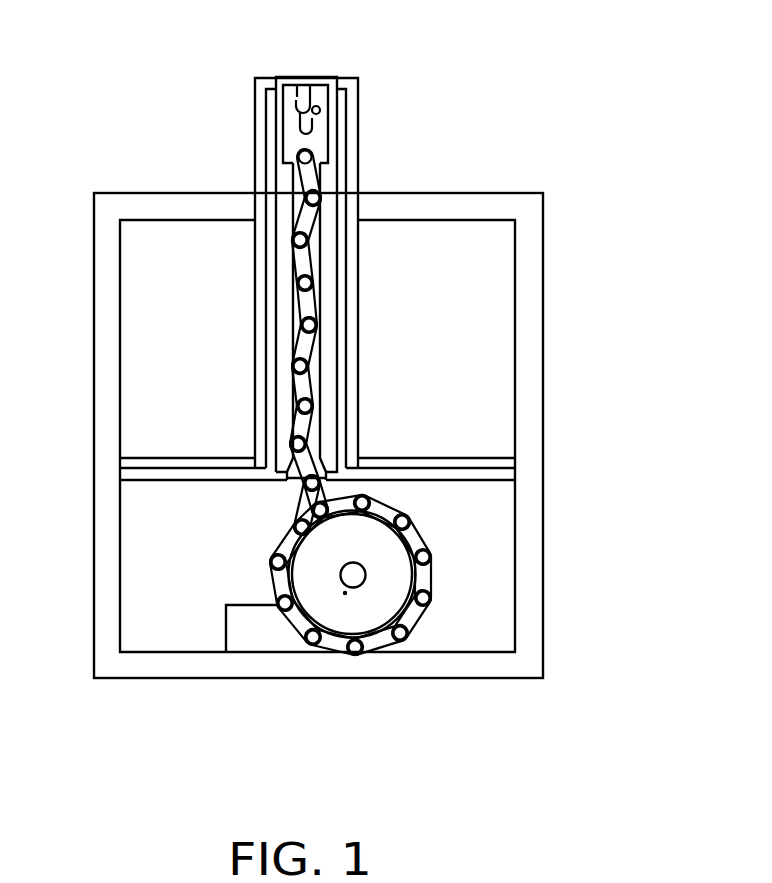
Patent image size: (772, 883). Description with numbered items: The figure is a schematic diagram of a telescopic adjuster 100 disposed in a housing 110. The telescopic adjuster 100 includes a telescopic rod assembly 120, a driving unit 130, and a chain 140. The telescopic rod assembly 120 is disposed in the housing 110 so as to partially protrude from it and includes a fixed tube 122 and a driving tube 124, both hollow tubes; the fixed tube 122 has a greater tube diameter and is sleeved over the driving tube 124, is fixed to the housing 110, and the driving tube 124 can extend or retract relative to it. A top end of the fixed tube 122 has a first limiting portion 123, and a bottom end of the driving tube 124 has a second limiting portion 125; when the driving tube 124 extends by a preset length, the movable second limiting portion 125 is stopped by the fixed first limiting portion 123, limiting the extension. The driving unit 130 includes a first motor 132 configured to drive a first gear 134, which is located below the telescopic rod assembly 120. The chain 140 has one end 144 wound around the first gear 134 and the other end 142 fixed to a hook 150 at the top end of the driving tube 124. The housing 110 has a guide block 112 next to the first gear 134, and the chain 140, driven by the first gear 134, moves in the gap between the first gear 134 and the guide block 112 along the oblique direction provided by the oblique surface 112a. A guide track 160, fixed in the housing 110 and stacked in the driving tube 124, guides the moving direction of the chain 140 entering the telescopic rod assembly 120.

The telescopic adjuster 100 is at (666, 84).
The housing 110 is at (103, 260).
The guide block 112 is at (250, 625).
The oblique surface 112a is at (345, 593).
The telescopic rod assembly 120 is at (186, 312).
The fixed tube 122 is at (258, 175).
The first limiting portion 123 is at (257, 80).
The driving tube 124 is at (283, 122).
The second limiting portion 125 is at (270, 465).
The driving unit 130 is at (319, 658).
The first motor 132 is at (342, 573).
The first gear 134 is at (335, 613).
The chain 140 is at (382, 387).
The other end of the chain 142 is at (297, 113).
The one end of the chain 144 is at (343, 507).
The hook 150 is at (292, 93).
The guide track 160 is at (324, 228).